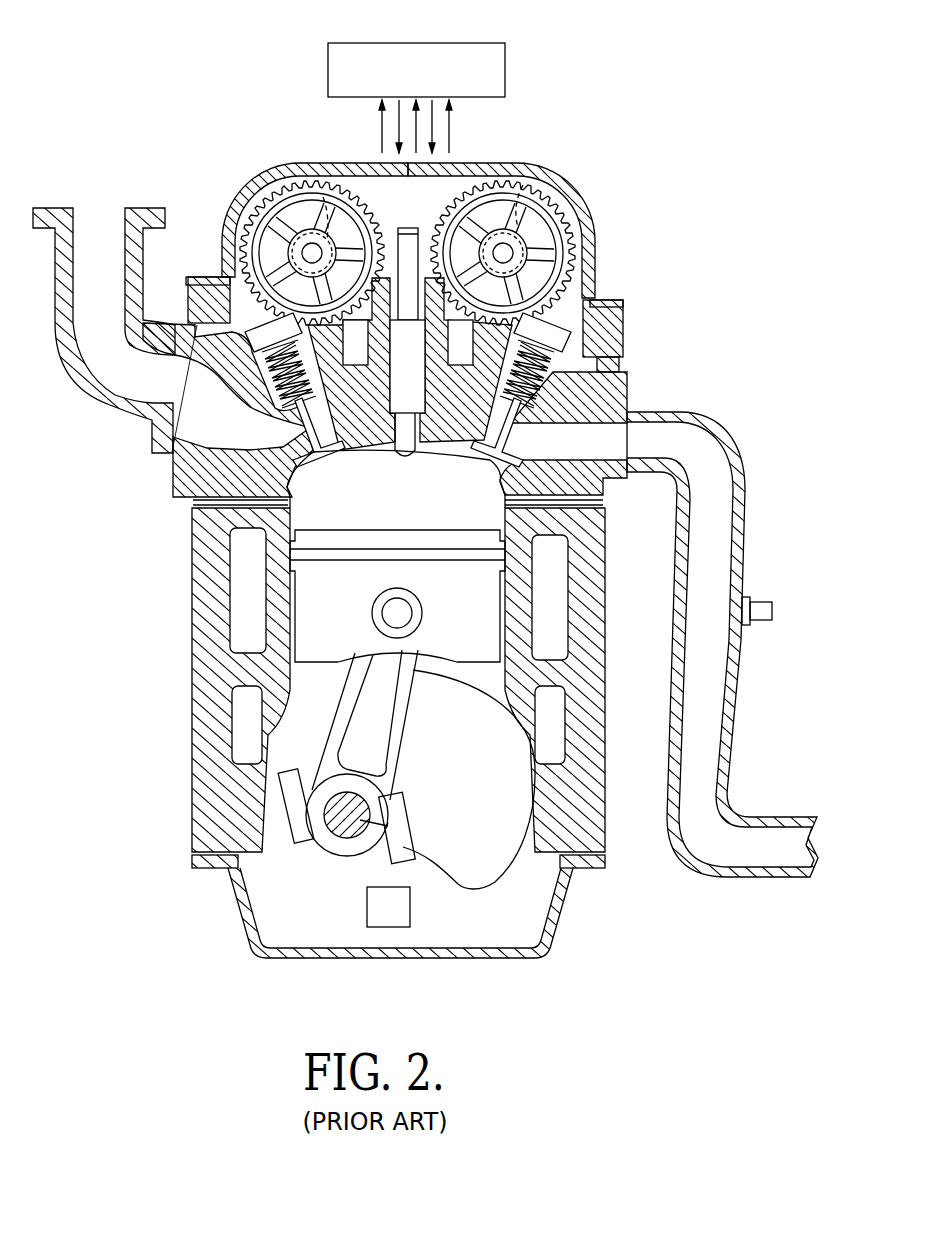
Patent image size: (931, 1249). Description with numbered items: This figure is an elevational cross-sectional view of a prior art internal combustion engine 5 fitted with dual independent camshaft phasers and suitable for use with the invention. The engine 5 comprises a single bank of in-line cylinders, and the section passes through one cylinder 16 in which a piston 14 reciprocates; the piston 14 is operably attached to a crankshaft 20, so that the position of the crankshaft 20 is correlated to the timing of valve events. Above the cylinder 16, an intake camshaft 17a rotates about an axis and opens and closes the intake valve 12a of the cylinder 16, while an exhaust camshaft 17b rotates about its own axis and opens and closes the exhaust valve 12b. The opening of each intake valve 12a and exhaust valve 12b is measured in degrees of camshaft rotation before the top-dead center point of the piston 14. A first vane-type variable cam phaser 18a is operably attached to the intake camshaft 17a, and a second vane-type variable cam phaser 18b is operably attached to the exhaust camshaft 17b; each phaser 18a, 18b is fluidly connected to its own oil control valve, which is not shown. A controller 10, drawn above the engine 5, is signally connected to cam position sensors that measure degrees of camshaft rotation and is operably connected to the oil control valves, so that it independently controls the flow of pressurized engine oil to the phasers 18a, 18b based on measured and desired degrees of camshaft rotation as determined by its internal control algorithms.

The controller 10 is at (372, 43).
The intake camshaft 17a is at (302, 183).
The exhaust camshaft 17b is at (523, 185).
The first vane-type variable cam phaser 18a is at (262, 185).
The second vane-type variable cam phaser 18b is at (557, 193).
The intake valve 12a is at (153, 425).
The exhaust valve 12b is at (590, 420).
The cylinder 16 is at (300, 478).
The piston 14 is at (317, 587).
The internal combustion engine 5 is at (196, 676).
The crankshaft 20 is at (458, 872).